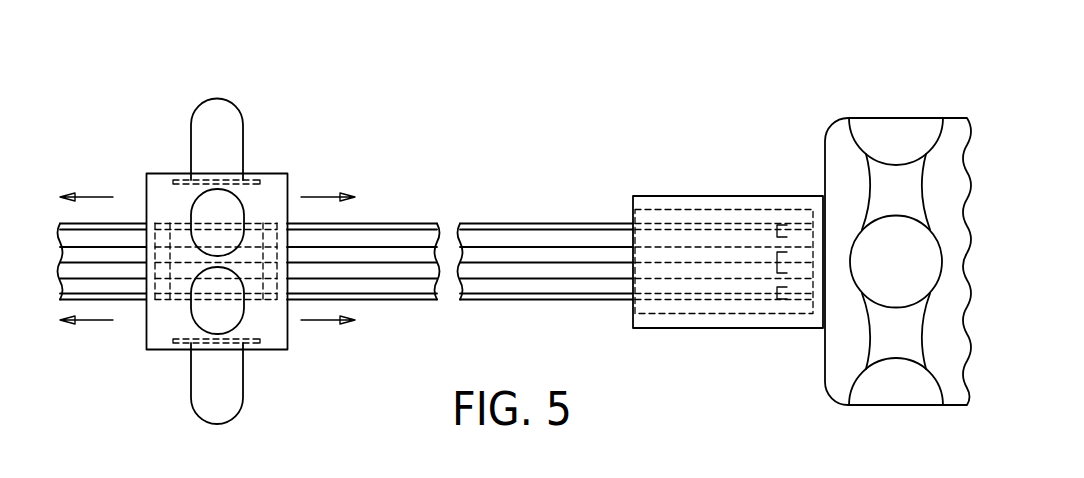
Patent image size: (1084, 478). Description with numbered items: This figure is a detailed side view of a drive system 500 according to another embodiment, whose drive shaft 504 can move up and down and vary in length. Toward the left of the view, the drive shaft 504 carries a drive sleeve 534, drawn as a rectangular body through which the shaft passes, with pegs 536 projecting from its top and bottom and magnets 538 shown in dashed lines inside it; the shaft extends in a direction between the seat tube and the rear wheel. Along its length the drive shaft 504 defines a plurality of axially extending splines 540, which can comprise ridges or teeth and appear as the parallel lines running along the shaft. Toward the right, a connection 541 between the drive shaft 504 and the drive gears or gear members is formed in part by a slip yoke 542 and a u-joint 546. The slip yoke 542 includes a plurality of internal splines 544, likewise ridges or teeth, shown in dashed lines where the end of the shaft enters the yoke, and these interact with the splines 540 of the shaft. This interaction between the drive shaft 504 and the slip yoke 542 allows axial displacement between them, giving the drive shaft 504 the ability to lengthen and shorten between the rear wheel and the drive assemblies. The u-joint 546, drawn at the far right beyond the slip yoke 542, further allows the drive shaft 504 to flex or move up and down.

The drive system 500 is at (781, 230).
The drive shaft 504 is at (520, 223).
The drive sleeve 534 is at (273, 188).
The pegs 536 is at (203, 118).
The magnets 538 is at (163, 240).
The splines 540 is at (370, 268).
The connection 541 is at (848, 356).
The slip yoke 542 is at (688, 196).
The internal splines 544 is at (663, 210).
The u-joint 546 is at (892, 118).